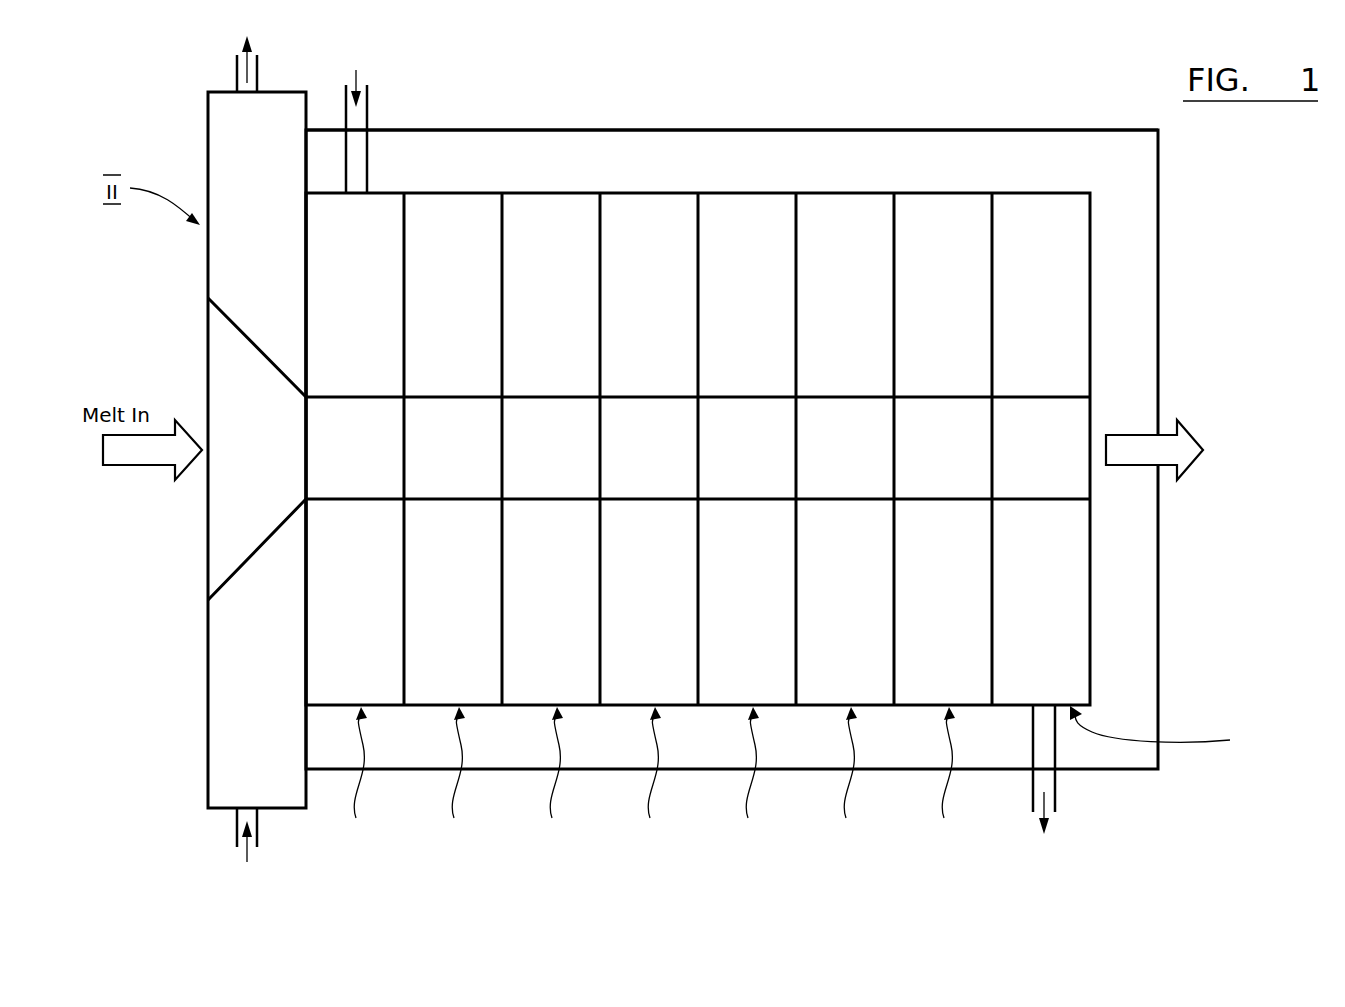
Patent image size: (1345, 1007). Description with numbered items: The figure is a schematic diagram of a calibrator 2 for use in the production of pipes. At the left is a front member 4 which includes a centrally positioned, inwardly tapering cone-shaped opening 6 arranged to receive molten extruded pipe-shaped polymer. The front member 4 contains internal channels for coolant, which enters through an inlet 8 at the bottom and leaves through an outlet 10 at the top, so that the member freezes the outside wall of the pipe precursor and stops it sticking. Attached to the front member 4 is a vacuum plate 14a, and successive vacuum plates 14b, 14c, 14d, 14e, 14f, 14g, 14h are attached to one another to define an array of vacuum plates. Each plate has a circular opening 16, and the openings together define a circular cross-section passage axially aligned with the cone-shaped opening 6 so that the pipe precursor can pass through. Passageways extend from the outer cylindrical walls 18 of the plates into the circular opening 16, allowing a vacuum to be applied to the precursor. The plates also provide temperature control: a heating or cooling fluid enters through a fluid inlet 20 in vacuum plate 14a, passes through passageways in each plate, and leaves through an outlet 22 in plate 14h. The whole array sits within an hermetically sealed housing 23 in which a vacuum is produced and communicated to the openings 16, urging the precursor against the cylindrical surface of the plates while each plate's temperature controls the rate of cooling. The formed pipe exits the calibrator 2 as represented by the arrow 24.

The calibrator 2 is at (577, 83).
The front member 4 is at (247, 167).
The cone-shaped opening 6 is at (248, 475).
The inlet 8 is at (240, 820).
The outlet 10 is at (242, 82).
The vacuum plate 14a is at (357, 779).
The vacuum plate 14b is at (455, 779).
The vacuum plate 14c is at (553, 779).
The vacuum plate 14d is at (651, 779).
The vacuum plate 14e is at (750, 779).
The vacuum plate 14f is at (847, 779).
The vacuum plate 14g is at (947, 779).
The vacuum plate 14h is at (1170, 732).
The circular opening 16 is at (355, 455).
The outer cylindrical walls 18 is at (383, 193).
The fluid inlet 20 is at (358, 120).
The outlet 22 is at (1050, 785).
The hermetically sealed housing 23 is at (838, 129).
The arrow 24 is at (1185, 453).